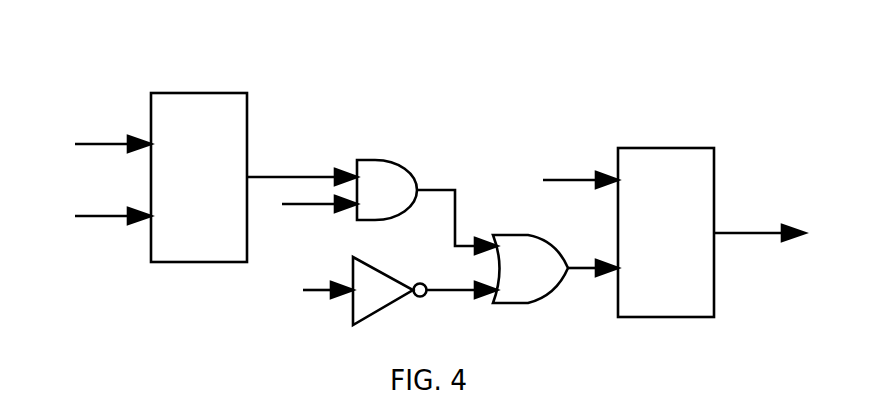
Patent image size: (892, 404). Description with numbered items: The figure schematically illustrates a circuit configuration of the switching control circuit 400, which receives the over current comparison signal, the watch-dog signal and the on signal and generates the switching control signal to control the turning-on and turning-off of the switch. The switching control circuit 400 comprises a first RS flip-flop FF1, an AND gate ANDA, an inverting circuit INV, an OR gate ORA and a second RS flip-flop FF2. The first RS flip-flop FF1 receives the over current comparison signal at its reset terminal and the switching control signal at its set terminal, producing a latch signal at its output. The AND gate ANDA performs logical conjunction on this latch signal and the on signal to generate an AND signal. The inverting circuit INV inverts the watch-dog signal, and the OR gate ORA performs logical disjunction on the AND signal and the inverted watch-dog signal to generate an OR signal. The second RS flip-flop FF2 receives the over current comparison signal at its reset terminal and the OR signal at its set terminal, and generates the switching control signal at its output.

The switching control circuit 400 is at (435, 182).
The first RS flip-flop FF1 is at (156, 160).
The second RS flip-flop FF2 is at (669, 215).
The AND gate ANDA is at (387, 190).
The OR gate ORA is at (530, 269).
The inverting circuit INV is at (390, 291).